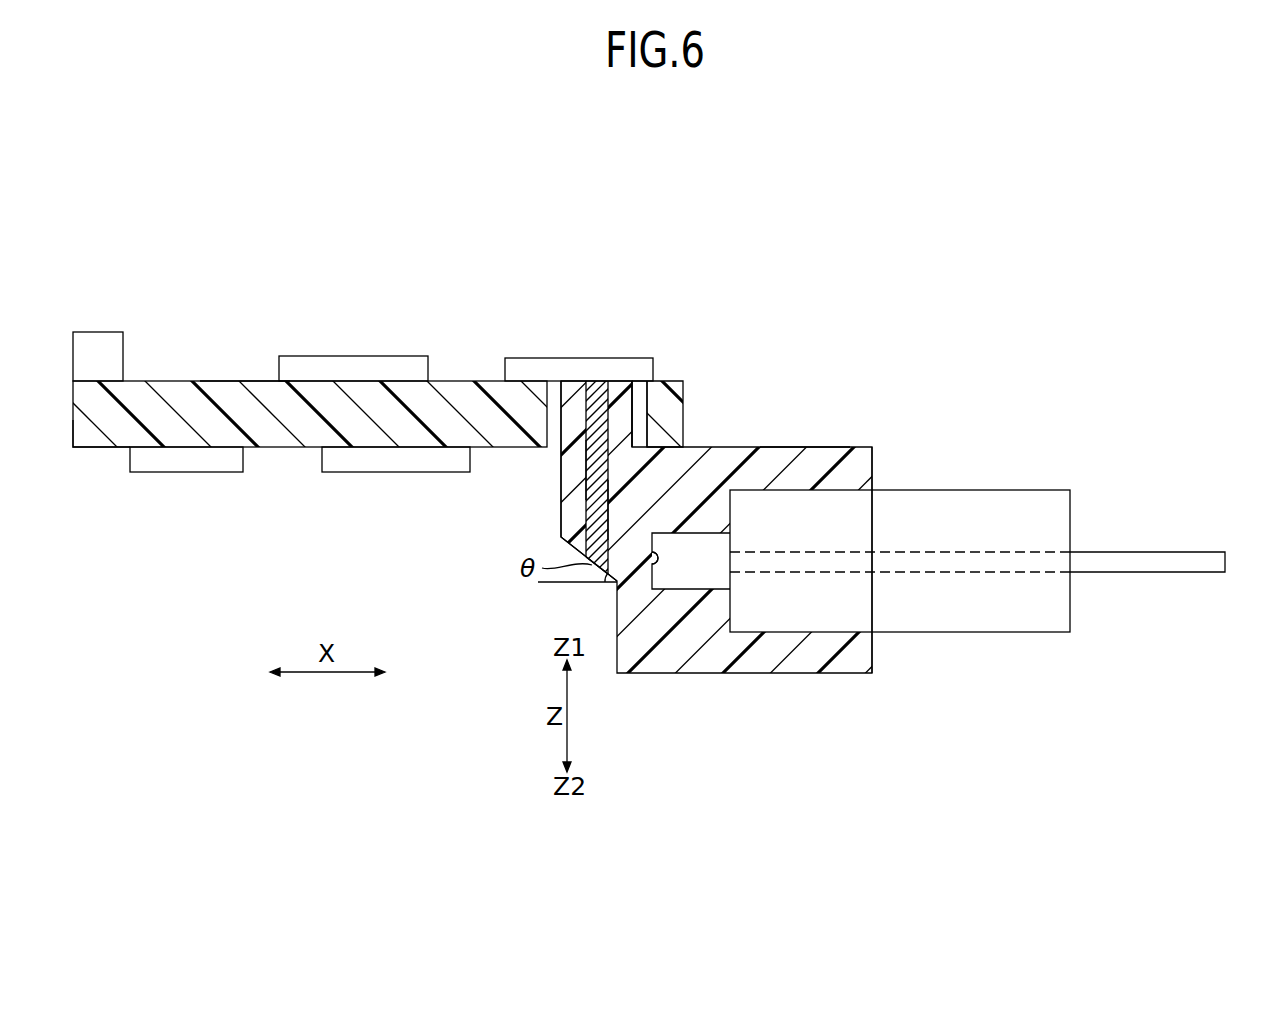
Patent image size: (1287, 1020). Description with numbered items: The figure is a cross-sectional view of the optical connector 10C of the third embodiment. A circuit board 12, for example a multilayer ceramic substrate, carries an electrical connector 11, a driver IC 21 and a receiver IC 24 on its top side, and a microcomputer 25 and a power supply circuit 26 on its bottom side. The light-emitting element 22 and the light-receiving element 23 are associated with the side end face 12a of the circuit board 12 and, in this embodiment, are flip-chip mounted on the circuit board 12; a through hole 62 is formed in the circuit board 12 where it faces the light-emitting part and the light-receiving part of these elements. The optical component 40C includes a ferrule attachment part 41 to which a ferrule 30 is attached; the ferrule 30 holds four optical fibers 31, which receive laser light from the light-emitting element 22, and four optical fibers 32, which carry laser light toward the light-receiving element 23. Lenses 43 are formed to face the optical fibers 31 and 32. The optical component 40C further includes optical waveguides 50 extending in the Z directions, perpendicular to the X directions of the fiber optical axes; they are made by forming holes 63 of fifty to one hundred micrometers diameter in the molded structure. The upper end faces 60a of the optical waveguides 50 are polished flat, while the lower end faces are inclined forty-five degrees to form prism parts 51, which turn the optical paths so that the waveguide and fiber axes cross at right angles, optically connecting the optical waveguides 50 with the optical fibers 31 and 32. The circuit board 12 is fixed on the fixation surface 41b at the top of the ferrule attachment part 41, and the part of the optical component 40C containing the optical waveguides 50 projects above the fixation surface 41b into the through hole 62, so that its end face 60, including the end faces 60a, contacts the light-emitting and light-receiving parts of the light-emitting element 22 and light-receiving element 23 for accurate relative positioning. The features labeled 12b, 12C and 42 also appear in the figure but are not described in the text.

The optical connector 10C is at (1012, 263).
The electrical connector 11 is at (96, 345).
The circuit board 12 is at (216, 430).
The side end face 12a is at (683, 410).
The first surface of substrate 12b is at (242, 381).
The second surface of substrate 12C is at (92, 448).
The driver IC 21 is at (357, 366).
The light-emitting element 22 is at (570, 330).
The light-receiving element 23 is at (524, 372).
The receiver IC 24 is at (353, 330).
The microcomputer 25 is at (357, 460).
The power supply circuit 26 is at (163, 458).
The ferrule 30 is at (1046, 508).
The optical fibers 31 is at (1175, 539).
The optical fibers 32 is at (1163, 557).
The optical component 40C is at (760, 443).
The ferrule attachment part 41 is at (828, 490).
The fixation surface 41b is at (822, 447).
The opening 42 is at (655, 553).
The lenses 43 is at (658, 577).
The optical waveguides 50 is at (598, 503).
The prism parts 51 is at (588, 563).
The end face 60 is at (615, 395).
The end faces 60a is at (597, 400).
The through hole 62 is at (638, 390).
The holes 63 is at (585, 478).